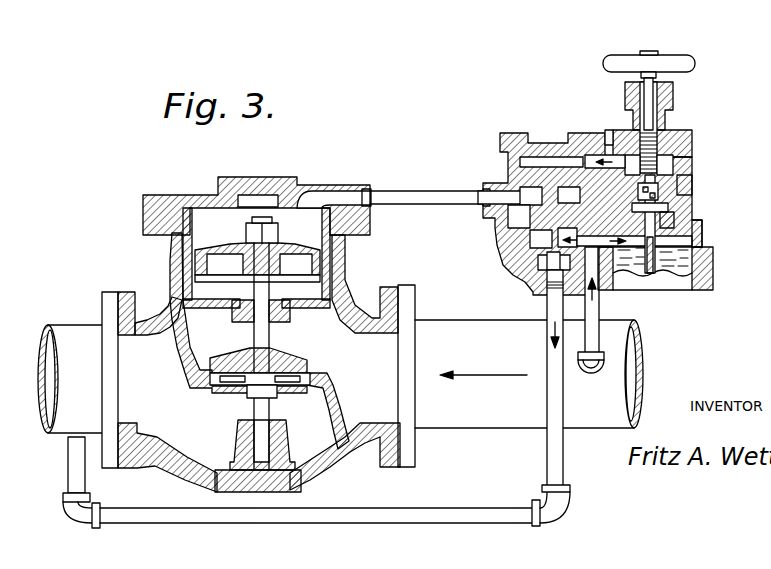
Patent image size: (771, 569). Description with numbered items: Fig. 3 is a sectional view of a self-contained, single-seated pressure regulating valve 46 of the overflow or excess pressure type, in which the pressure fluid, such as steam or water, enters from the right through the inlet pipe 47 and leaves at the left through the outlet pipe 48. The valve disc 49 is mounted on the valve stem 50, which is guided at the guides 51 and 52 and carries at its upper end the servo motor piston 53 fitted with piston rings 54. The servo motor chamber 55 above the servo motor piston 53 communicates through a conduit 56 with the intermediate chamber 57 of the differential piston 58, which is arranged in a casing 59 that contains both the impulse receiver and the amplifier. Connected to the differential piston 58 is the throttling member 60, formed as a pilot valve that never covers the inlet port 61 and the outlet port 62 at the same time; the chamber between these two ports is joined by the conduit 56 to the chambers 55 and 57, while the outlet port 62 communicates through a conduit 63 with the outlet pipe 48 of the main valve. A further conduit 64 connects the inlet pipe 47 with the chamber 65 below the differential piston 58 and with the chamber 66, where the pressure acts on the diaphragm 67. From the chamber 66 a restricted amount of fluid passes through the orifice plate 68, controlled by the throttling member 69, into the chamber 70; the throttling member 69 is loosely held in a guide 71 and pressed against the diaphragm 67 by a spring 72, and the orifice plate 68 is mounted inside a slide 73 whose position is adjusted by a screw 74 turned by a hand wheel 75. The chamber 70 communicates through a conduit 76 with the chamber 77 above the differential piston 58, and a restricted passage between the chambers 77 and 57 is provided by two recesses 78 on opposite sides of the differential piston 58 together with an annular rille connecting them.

The pressure regulating valve 46 is at (333, 462).
The inlet pipe 47 is at (503, 422).
The outlet pipe 48 is at (73, 333).
The valve disc 49 is at (297, 362).
The valve stem 50 is at (262, 330).
The guide 51 is at (276, 427).
The guide 52 is at (236, 306).
The servo motor piston 53 is at (292, 246).
The piston rings 54 is at (332, 262).
The servo motor chamber 55 is at (215, 228).
The conduit 56 is at (408, 200).
The intermediate chamber 57 is at (530, 196).
The differential piston 58 is at (528, 238).
The casing 59 is at (505, 150).
The throttling member 60 is at (530, 282).
The inlet port 61 is at (518, 270).
The outlet port 62 is at (541, 296).
The conduit 63 is at (418, 518).
The conduit 64 is at (599, 296).
The chamber 65 is at (504, 250).
The chamber 66 is at (700, 252).
The diaphragm 67 is at (675, 274).
The orifice plate 68 is at (692, 205).
The throttling member 69 is at (660, 195).
The chamber 70 is at (694, 158).
The guide 71 is at (704, 235).
The spring 72 is at (692, 180).
The slide 73 is at (702, 224).
The screw 74 is at (675, 132).
The hand wheel 75 is at (675, 62).
The conduit 76 is at (595, 133).
The chamber 77 is at (535, 160).
The recesses 78 is at (557, 162).